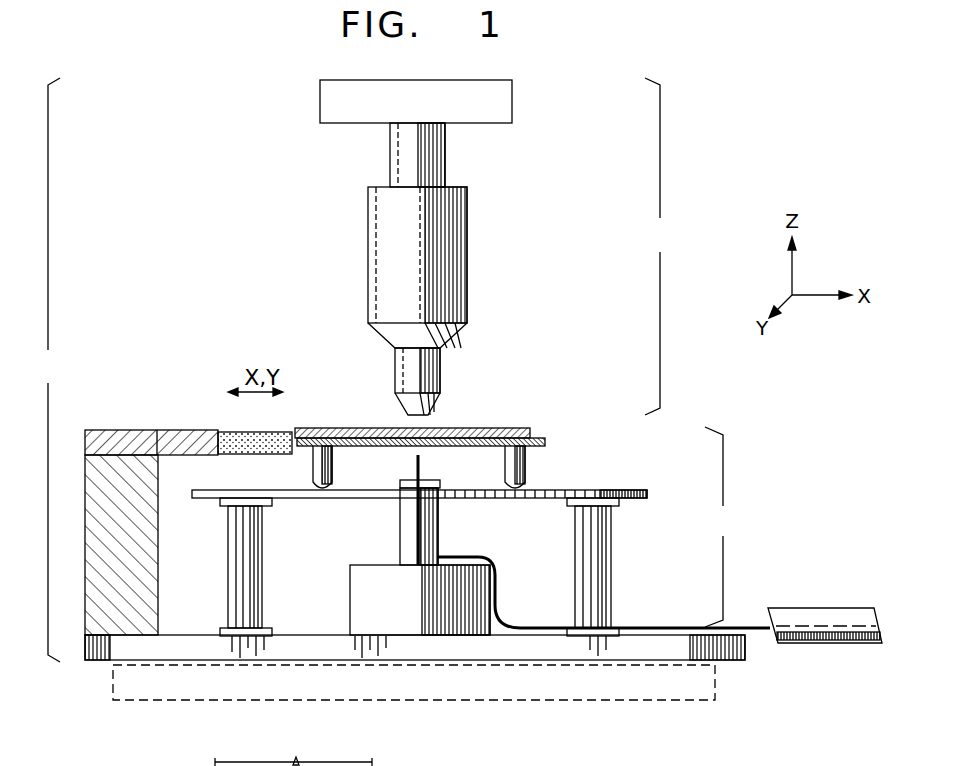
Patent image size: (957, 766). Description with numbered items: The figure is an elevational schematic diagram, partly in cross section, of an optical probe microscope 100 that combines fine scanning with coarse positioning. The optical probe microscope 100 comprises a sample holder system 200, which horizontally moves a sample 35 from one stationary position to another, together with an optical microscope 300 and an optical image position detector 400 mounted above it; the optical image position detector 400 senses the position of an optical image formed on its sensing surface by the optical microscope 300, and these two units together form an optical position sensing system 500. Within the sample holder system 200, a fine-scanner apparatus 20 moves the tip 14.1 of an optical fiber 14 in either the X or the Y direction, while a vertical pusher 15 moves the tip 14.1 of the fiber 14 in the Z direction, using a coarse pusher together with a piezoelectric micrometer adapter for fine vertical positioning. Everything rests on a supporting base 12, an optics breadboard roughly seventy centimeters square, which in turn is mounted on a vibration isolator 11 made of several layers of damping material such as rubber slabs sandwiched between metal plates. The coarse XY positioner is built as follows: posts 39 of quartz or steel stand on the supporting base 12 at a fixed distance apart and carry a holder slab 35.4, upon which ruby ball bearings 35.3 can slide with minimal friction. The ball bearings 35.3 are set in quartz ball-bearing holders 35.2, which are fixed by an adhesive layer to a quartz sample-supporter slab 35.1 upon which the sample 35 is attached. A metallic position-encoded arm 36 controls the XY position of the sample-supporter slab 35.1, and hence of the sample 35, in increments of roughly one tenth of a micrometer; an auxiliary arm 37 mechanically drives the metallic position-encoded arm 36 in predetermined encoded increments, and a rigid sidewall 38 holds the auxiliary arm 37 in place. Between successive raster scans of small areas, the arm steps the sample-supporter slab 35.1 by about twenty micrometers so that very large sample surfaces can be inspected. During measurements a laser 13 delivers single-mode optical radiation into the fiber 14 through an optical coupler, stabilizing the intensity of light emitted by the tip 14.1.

The optical image position detector 400 is at (513, 105).
The optical microscope 300 is at (382, 256).
The optical position sensing system 500 is at (656, 246).
The optical probe microscope 100 is at (46, 370).
The sample holder system 200 is at (722, 527).
The auxiliary arm 37 is at (163, 430).
The metallic position-encoded arm 36 is at (227, 432).
The sample 35 is at (512, 428).
The sample-supporter slab 35.1 is at (548, 441).
The ball-bearing holders 35.2 is at (313, 477).
The ball bearings 35.3 is at (526, 490).
The holder slab 35.4 is at (648, 490).
The tip of optical fiber 14.1 is at (421, 474).
The optical fiber 14 is at (505, 612).
The rigid sidewall 38 is at (135, 558).
The posts 39 is at (262, 588).
The fine-scanner apparatus 20 is at (400, 542).
The vertical pusher 15 is at (360, 622).
The laser 13 is at (822, 607).
The supporting base 12 is at (746, 660).
The vibration isolator 11 is at (612, 686).